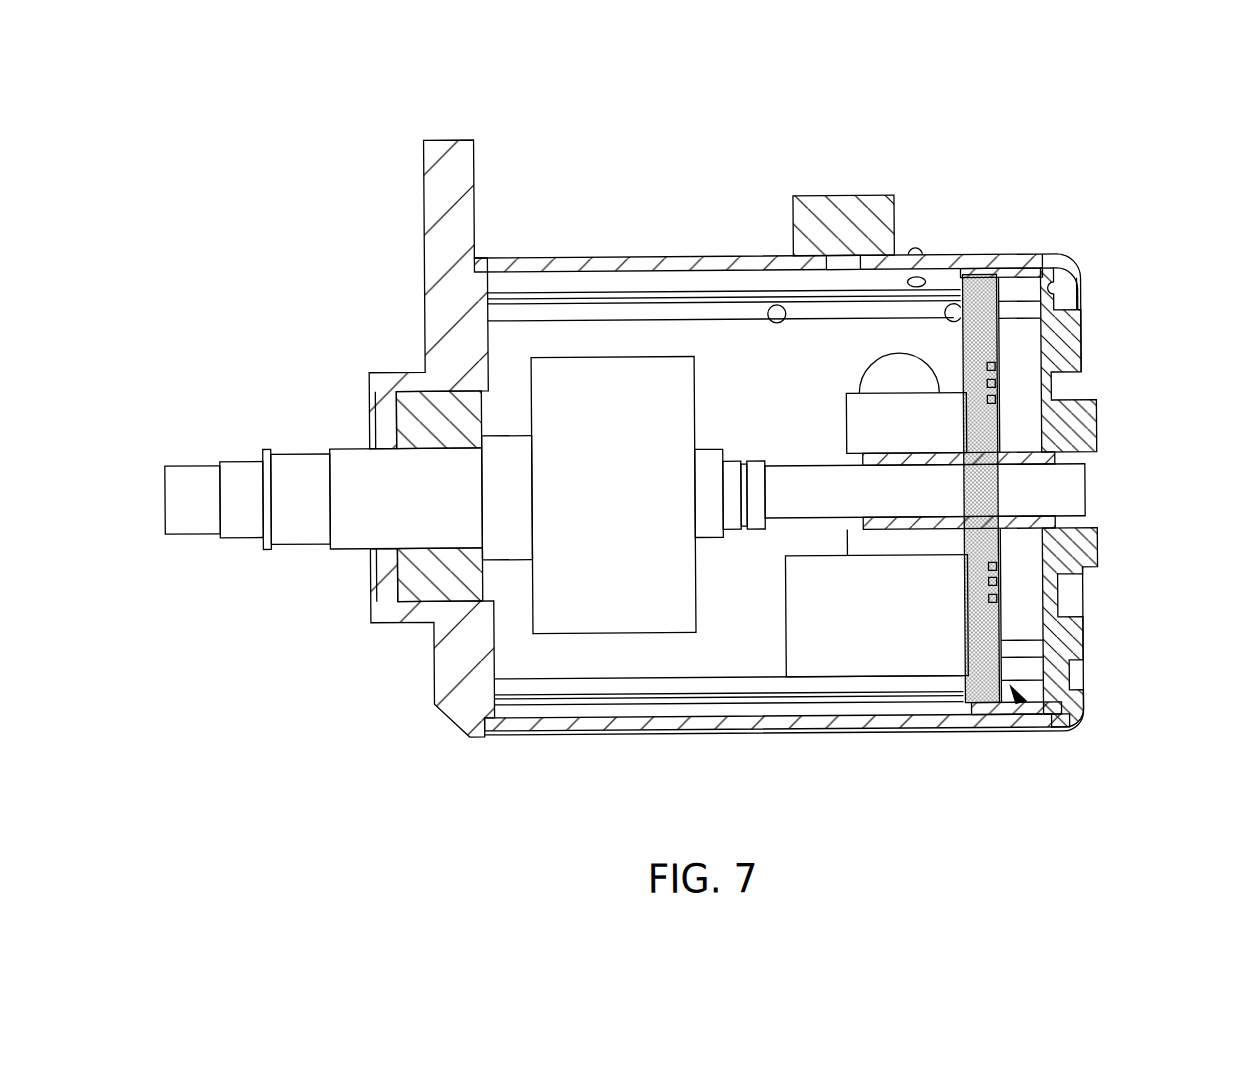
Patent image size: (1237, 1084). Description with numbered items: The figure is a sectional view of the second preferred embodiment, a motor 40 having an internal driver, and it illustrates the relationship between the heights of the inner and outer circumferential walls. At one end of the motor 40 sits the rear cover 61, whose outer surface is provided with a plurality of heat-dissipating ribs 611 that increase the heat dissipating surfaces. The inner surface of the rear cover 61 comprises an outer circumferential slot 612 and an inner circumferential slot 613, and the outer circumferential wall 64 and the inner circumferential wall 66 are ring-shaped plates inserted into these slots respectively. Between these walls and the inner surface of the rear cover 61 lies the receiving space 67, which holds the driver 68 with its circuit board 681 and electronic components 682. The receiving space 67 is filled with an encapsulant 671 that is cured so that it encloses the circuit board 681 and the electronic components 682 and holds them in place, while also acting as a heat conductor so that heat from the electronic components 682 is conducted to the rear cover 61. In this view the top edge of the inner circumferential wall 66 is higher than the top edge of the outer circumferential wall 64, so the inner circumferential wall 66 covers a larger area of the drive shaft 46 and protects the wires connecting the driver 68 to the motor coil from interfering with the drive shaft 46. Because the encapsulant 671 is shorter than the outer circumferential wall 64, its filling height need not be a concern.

The motor 40 is at (623, 168).
The drive shaft 46 is at (342, 445).
The rear cover 61 is at (826, 441).
The heat-dissipating ribs 611 is at (1085, 343).
The outer circumferential slot 612 is at (1075, 266).
The inner circumferential slot 613 is at (1097, 458).
The outer circumferential wall 64 is at (993, 712).
The inner circumferential wall 66 is at (917, 531).
The receiving space 67 is at (986, 478).
The encapsulant 671 is at (978, 290).
The driver 68 is at (974, 576).
The circuit board 681 is at (1050, 642).
The electronic components 682 is at (788, 638).